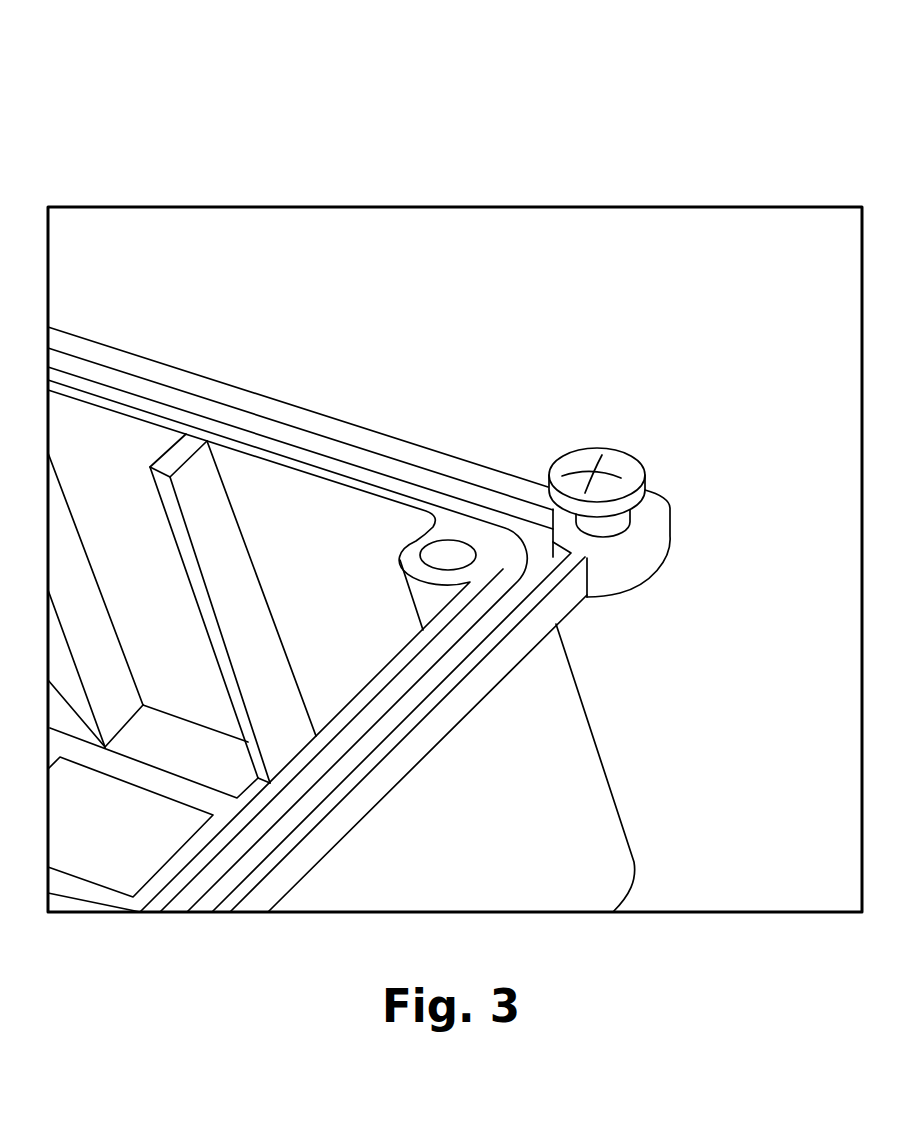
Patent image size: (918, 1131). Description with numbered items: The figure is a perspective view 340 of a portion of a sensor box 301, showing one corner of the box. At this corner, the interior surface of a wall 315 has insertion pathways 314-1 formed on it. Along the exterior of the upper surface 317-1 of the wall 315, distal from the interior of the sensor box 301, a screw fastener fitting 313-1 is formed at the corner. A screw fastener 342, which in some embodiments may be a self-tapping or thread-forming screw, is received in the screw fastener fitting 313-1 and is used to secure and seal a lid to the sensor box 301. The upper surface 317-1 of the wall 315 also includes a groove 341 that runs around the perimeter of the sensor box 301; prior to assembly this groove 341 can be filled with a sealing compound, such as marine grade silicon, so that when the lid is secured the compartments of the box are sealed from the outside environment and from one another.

The perspective view 340 is at (217, 133).
The upper surface 317-1 is at (355, 435).
The groove 341 is at (258, 427).
The insertion pathways 314-1 is at (410, 595).
The screw fastener fittings 313-1 is at (670, 535).
The screw fastener 342 is at (640, 452).
The sensor box 301 is at (537, 747).
The wall 315 is at (500, 845).